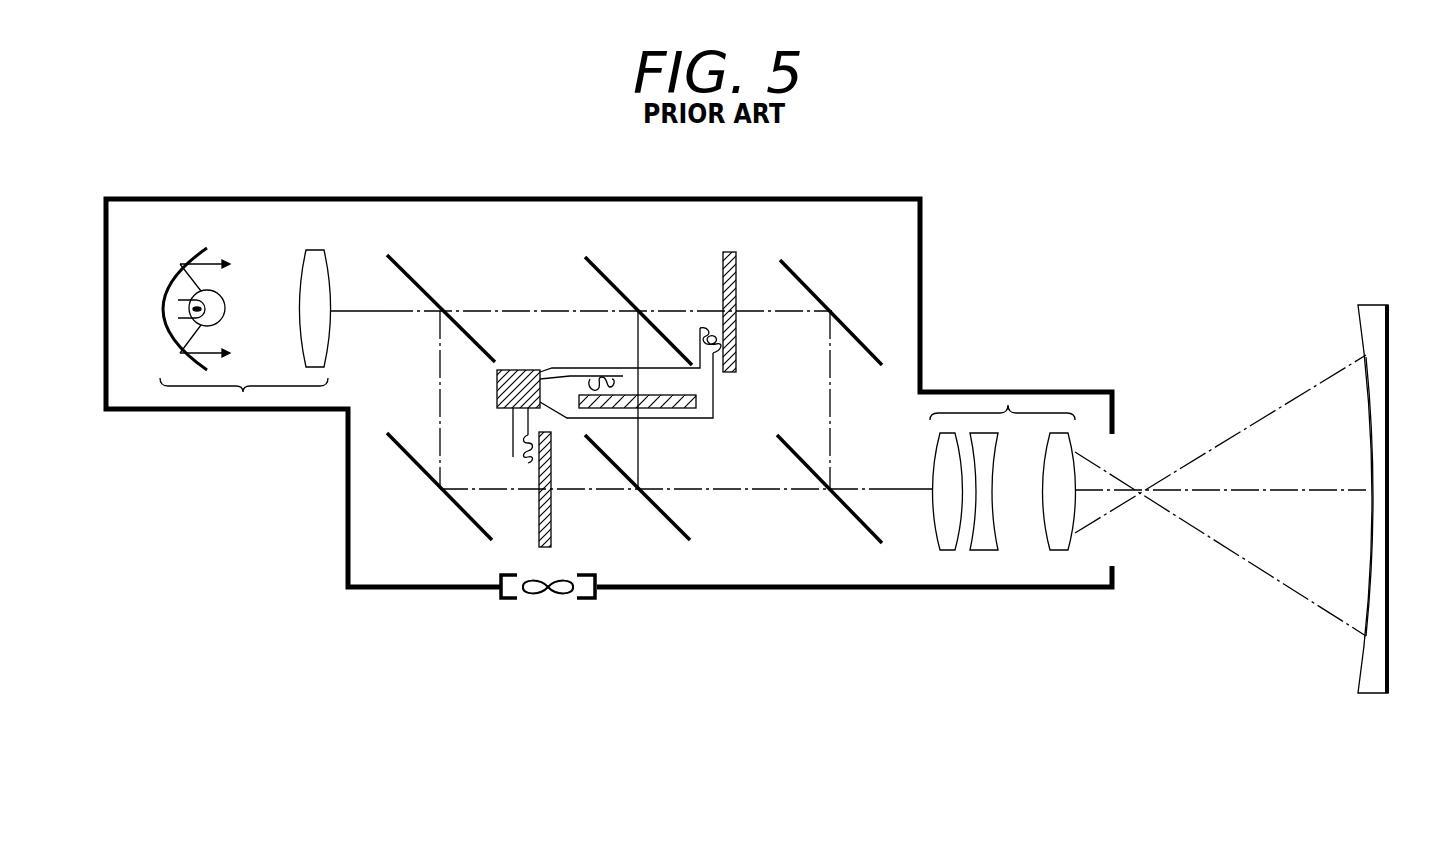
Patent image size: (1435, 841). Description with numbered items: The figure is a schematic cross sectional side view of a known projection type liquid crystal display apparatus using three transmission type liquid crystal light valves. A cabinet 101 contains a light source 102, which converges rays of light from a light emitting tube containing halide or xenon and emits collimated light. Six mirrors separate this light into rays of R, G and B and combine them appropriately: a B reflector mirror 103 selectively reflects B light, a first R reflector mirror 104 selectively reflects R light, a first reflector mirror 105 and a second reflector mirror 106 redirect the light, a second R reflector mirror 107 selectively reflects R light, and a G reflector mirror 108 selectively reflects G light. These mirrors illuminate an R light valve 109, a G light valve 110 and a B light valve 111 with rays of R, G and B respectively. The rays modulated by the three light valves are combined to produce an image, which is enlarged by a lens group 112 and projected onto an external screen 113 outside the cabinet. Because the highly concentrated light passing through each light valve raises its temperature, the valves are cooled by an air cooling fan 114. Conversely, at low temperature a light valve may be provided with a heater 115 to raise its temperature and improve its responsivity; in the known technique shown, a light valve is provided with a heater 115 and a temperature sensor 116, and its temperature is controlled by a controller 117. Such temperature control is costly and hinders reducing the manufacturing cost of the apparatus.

The cabinet 101 is at (838, 198).
The light source 102 is at (243, 393).
The B reflector mirror 103 is at (426, 292).
The first R reflector mirror 104 is at (623, 292).
The first reflector mirror 105 is at (817, 293).
The second reflector mirror 106 is at (460, 510).
The second R reflector mirror 107 is at (658, 512).
The G reflector mirror 108 is at (850, 515).
The R light valve 109 is at (670, 408).
The G light valve 110 is at (733, 250).
The B light valve 111 is at (555, 505).
The lens group 112 is at (1008, 400).
The external screen 113 is at (1375, 303).
The air cooling fan 114 is at (548, 597).
The heater 115 is at (525, 455).
The temperature sensor 116 is at (512, 425).
The controller 117 is at (522, 366).